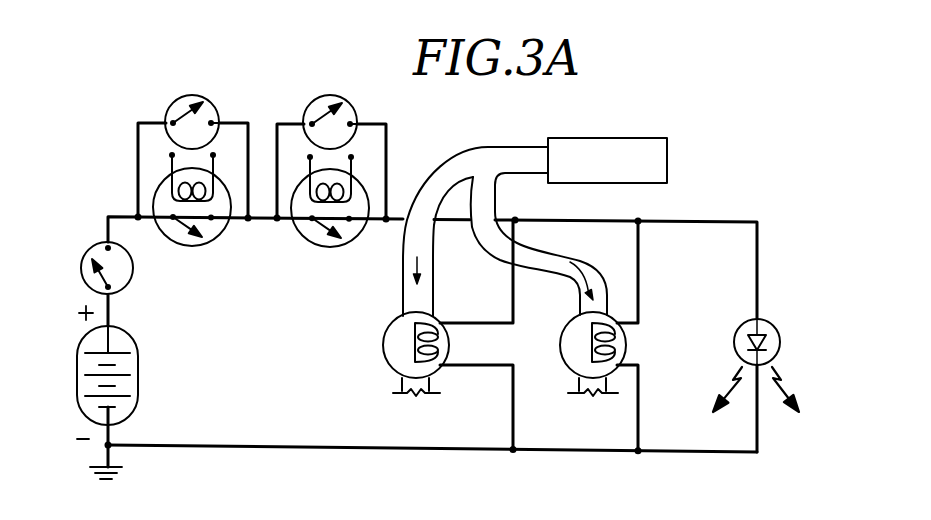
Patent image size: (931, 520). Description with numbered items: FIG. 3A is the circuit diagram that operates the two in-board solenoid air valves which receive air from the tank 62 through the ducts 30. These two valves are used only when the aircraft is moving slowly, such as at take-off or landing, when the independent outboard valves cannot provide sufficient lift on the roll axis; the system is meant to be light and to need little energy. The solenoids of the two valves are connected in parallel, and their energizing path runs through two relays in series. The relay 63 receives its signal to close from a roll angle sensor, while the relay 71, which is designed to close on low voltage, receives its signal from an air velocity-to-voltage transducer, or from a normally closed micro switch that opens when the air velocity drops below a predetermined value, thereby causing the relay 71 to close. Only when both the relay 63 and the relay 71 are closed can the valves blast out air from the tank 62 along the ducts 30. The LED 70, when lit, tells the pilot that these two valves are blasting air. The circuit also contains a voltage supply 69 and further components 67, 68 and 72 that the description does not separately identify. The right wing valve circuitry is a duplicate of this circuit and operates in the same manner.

The ducts 30 is at (433, 289).
The tank 62 is at (668, 162).
The relay 63 is at (171, 243).
The relay switch 67 is at (212, 101).
The power switch 68 is at (90, 245).
The voltage supply 69 is at (77, 376).
The LED 70 is at (743, 318).
The relay 71 is at (322, 247).
The relay switch 72 is at (350, 102).